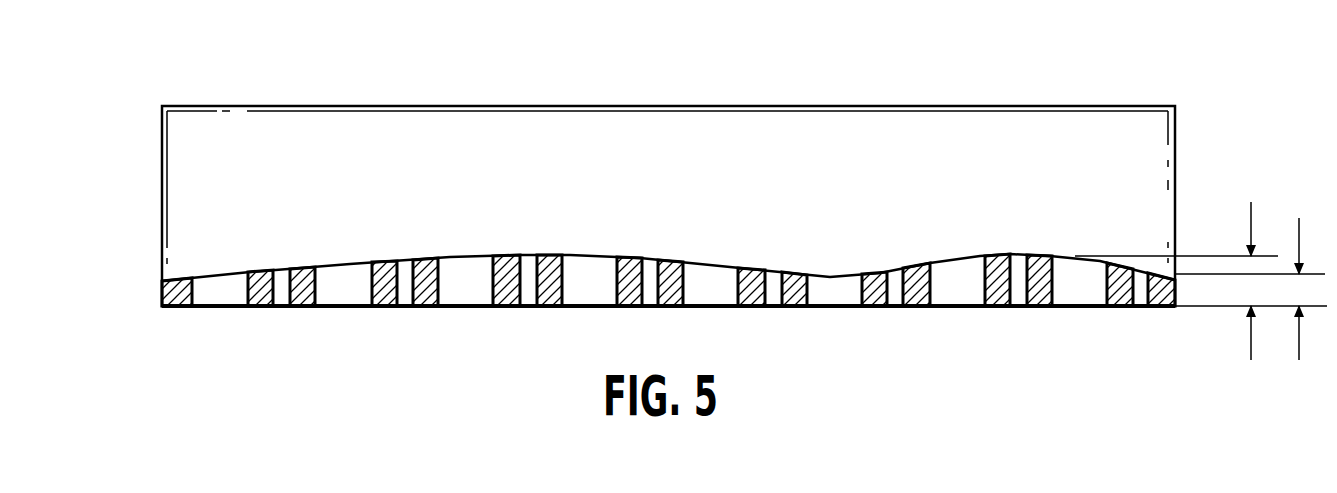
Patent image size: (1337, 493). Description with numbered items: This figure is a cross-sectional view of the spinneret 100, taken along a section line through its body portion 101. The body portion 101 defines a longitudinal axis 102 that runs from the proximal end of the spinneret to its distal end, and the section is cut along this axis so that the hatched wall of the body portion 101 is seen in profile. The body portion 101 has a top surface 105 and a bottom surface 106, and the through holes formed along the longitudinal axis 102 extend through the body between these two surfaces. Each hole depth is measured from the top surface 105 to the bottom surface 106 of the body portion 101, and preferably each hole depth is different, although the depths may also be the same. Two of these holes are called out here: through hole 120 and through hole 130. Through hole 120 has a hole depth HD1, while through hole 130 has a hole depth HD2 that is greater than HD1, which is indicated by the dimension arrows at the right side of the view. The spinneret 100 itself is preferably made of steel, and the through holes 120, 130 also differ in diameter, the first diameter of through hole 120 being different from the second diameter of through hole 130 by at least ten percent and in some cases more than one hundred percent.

The spinneret 100 is at (868, 62).
The body portion 101 is at (898, 104).
The longitudinal axis 102 is at (955, 308).
The top surface 105 is at (180, 280).
The bottom surface 106 is at (173, 307).
The through hole 120 is at (1138, 272).
The through hole 130 is at (1078, 268).
The hole depth HD1 is at (1255, 305).
The hole depth HD2 is at (1247, 297).